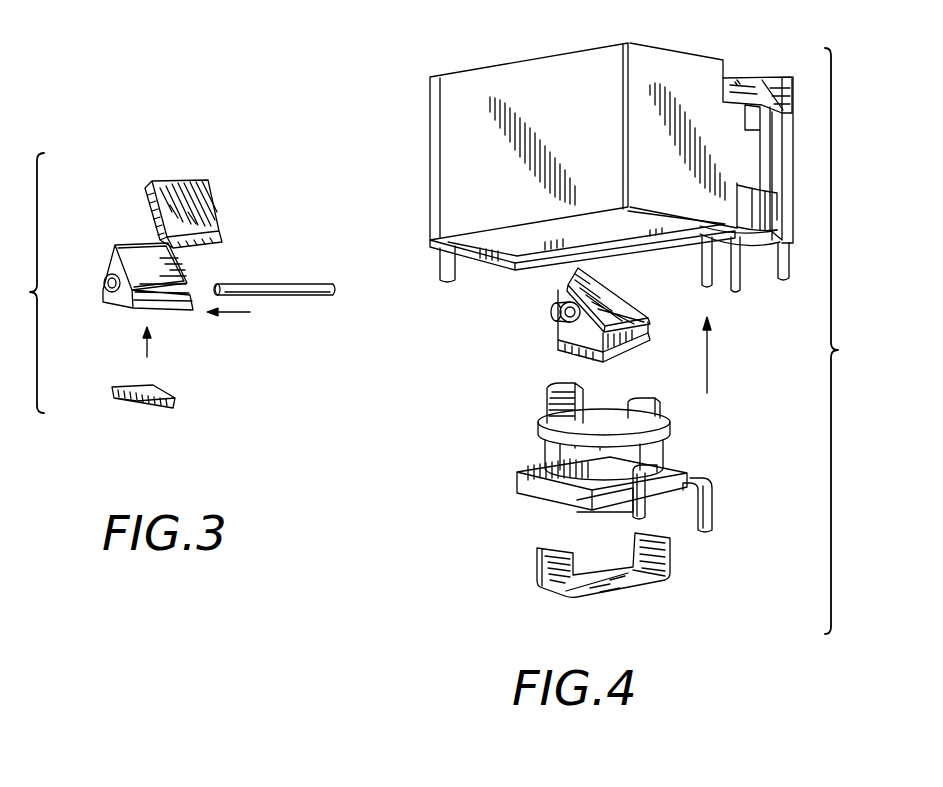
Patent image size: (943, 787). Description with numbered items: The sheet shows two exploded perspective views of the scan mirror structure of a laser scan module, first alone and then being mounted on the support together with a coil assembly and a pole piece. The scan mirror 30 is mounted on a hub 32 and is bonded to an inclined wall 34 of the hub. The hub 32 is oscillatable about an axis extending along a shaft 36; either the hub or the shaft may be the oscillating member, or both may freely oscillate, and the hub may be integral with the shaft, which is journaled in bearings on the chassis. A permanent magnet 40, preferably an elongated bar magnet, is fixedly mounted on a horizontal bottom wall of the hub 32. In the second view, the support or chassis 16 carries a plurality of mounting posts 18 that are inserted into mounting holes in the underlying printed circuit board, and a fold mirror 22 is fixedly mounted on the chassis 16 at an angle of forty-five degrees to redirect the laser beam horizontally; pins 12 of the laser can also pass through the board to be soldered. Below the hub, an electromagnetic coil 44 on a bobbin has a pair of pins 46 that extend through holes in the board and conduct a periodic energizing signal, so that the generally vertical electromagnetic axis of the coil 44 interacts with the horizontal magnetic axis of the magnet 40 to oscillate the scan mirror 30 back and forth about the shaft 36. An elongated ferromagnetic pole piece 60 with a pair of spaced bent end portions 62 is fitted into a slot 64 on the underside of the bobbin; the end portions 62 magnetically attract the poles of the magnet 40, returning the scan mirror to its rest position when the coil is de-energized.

In FIG. 4, the pins 12 is at (736, 293).
In FIG. 4, the chassis 16 is at (512, 52).
In FIG. 4, the mounting posts 18 is at (448, 263).
In FIG. 4, the fold mirror 22 is at (735, 90).
In FIG. 3, the scan mirror 30 is at (207, 203).
In FIG. 4, the scan mirror 30 is at (623, 290).
In FIG. 3, the hub 32 is at (100, 253).
In FIG. 4, the hub 32 is at (657, 338).
In FIG. 3, the inclined wall 34 is at (130, 253).
In FIG. 3, the shaft 36 is at (293, 297).
In FIG. 4, the shaft 36 is at (556, 310).
In FIG. 3, the permanent magnet 40 is at (117, 403).
In FIG. 4, the permanent magnet 40 is at (570, 352).
In FIG. 4, the electromagnetic coil 44 is at (673, 452).
In FIG. 4, the pins 46 is at (637, 513).
In FIG. 4, the pole piece 60 is at (627, 582).
In FIG. 4, the bent end portions 62 is at (535, 552).
In FIG. 4, the slot 64 is at (555, 513).